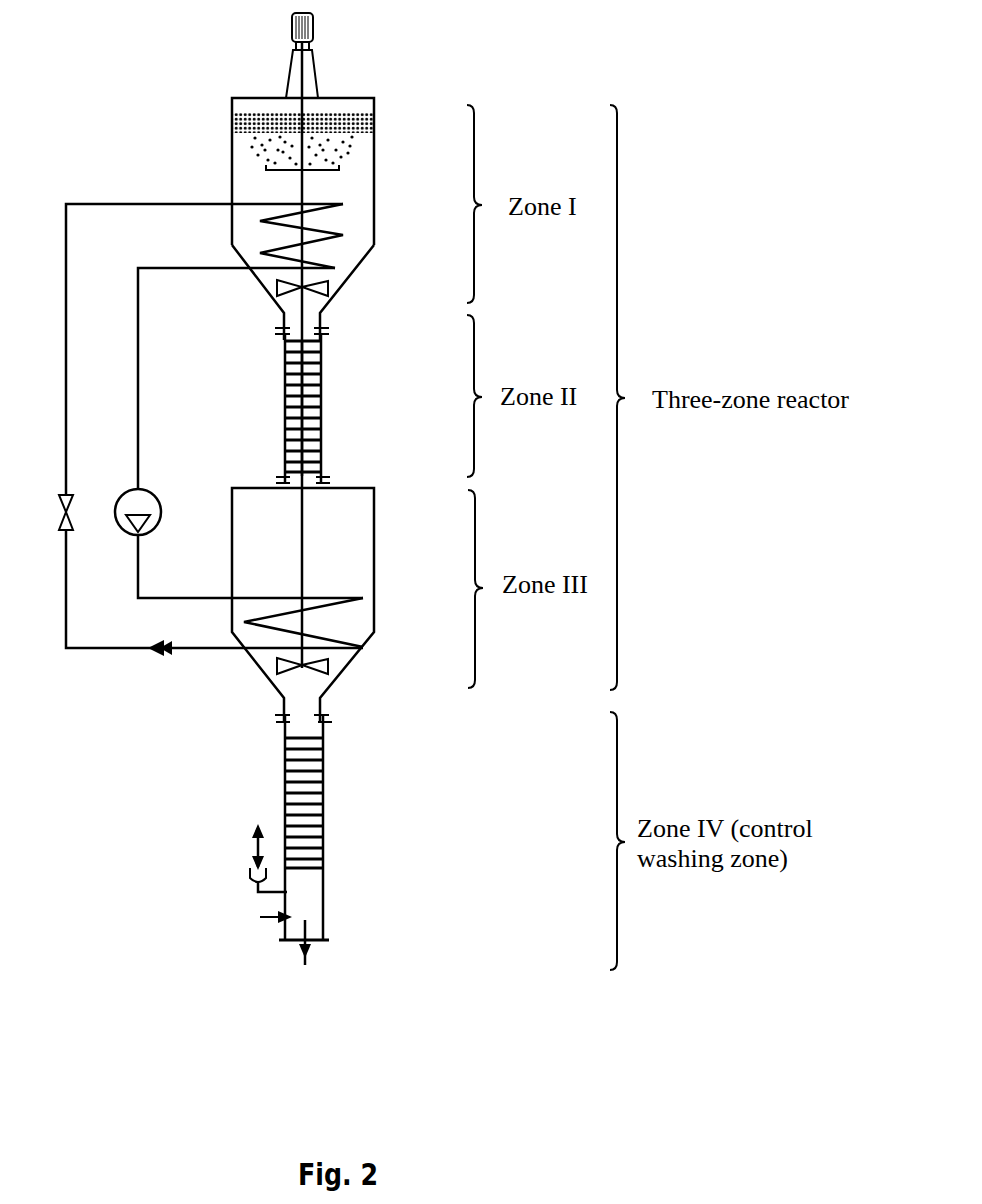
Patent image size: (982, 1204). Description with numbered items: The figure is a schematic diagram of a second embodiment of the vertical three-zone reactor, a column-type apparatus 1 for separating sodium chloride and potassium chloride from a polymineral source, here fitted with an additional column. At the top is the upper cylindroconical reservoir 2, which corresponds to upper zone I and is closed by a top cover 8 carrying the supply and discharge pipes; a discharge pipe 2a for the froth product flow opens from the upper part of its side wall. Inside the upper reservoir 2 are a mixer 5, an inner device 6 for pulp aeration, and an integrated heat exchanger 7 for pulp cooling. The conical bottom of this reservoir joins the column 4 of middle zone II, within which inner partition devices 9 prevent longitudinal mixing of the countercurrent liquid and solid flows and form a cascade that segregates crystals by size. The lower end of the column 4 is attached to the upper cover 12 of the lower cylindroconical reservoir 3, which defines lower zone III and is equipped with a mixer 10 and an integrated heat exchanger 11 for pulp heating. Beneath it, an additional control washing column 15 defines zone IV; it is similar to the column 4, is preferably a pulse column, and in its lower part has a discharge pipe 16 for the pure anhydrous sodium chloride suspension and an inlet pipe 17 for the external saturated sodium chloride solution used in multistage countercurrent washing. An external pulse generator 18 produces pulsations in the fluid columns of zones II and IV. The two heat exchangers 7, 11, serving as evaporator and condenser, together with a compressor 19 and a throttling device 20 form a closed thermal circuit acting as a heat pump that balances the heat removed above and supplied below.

The column-type apparatus 1 is at (333, 398).
The upper cylindroconical reservoir 2 is at (378, 192).
The discharge pipe for froth product flow 2a is at (374, 122).
The lower cylindroconical reservoir 3 is at (378, 558).
The column 4 is at (323, 382).
The mixer 5 is at (333, 287).
The inner device for pulp aeration 6 is at (283, 168).
The integrated heat exchanger for pulp cooling 7 is at (345, 228).
The top cover 8 is at (343, 97).
The inner partition devices 9 is at (300, 378).
The mixer 10 is at (327, 665).
The integrated heat exchanger for pulp heating 11 is at (323, 628).
The upper cover 12 is at (343, 487).
The additional control washing column 15 is at (327, 800).
The discharge pipe for pure anhydrous sodium chloride suspension 16 is at (308, 955).
The inlet pipe 17 is at (280, 922).
The external pulse generator 18 is at (252, 886).
The compressor 19 is at (163, 512).
The throttling device 20 is at (62, 521).